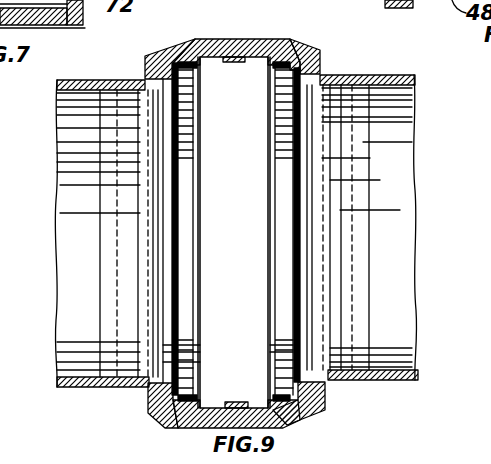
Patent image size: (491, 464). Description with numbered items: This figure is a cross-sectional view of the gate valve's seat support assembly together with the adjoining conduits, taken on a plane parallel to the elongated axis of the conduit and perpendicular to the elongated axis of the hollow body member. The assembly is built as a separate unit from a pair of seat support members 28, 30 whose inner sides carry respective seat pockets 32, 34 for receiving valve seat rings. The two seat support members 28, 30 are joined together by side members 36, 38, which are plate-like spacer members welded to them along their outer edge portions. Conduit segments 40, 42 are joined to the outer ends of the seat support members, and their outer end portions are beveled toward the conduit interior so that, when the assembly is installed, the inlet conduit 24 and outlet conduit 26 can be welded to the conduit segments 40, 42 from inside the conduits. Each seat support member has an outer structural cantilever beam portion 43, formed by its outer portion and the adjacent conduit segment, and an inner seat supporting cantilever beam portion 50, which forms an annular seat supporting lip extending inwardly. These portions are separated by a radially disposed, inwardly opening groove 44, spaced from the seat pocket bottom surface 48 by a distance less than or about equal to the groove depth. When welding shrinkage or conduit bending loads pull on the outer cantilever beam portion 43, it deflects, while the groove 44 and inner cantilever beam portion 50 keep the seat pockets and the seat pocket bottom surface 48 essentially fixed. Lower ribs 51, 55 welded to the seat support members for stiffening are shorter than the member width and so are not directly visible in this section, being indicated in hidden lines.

The inlet conduit 24 is at (88, 208).
The outlet conduit 26 is at (397, 137).
The seat support member 28 is at (143, 72).
The seat support member 30 is at (283, 48).
The seat pocket 32 is at (197, 112).
The seat pocket 34 is at (268, 82).
The side member 36 is at (228, 39).
The side member 38 is at (295, 425).
The conduit segment 40 is at (127, 297).
The conduit segment 42 is at (335, 74).
The outer structural cantilever beam portion 43 is at (143, 66).
The groove 44 is at (158, 115).
The seat pocket bottom surface 48 is at (198, 357).
The inner seat supporting cantilever beam portion 50 is at (168, 262).
The lower rib 51 is at (130, 231).
The lower rib 55 is at (345, 192).